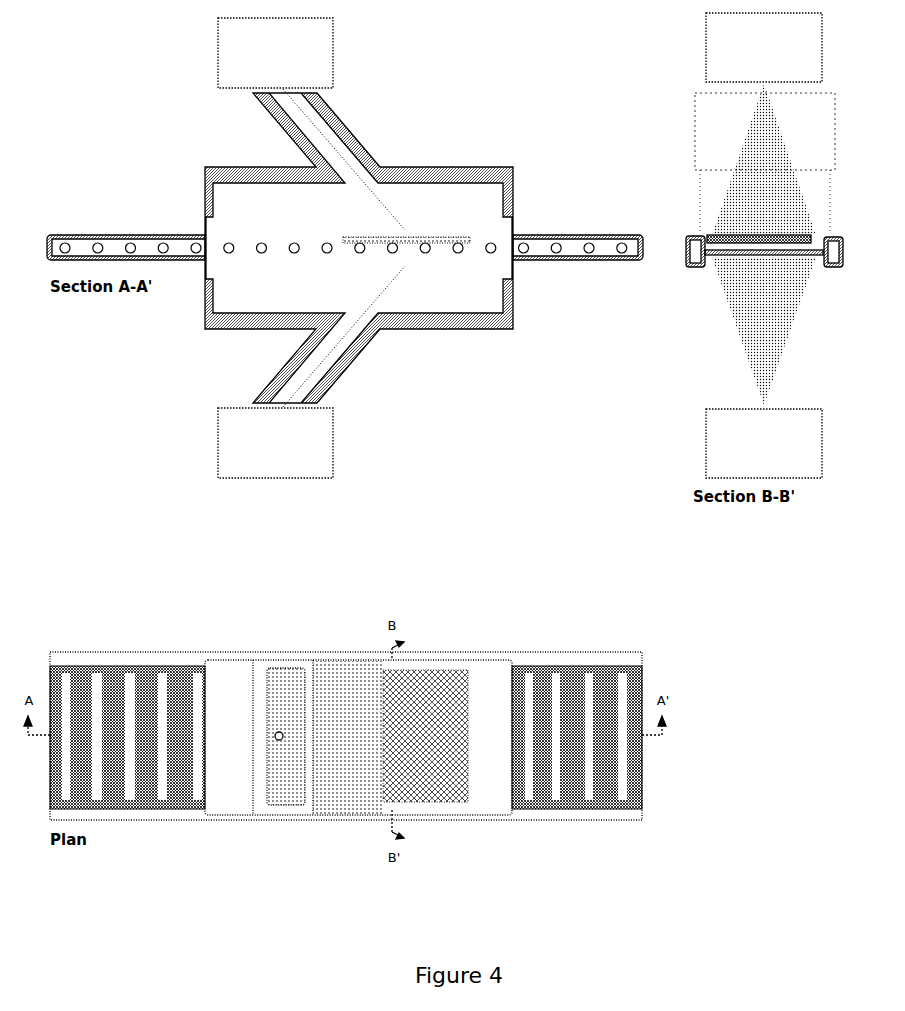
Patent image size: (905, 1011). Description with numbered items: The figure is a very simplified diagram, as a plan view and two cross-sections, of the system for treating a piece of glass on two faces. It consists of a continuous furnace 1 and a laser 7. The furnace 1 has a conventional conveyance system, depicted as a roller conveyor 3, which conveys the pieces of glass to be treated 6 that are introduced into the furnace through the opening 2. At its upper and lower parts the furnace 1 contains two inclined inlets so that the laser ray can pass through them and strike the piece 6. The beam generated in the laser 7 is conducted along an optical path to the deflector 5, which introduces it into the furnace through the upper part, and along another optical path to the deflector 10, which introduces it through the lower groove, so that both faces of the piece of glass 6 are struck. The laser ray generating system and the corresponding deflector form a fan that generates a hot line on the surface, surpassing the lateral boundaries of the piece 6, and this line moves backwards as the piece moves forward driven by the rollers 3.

The furnace 1 is at (686, 252).
The opening 2 is at (203, 228).
The conveyance system 3 is at (807, 250).
The deflector 5 is at (520, 50).
The piece of vitreous material 6 is at (793, 240).
The laser emission source 7 is at (559, 245).
The deflector 10 is at (520, 443).